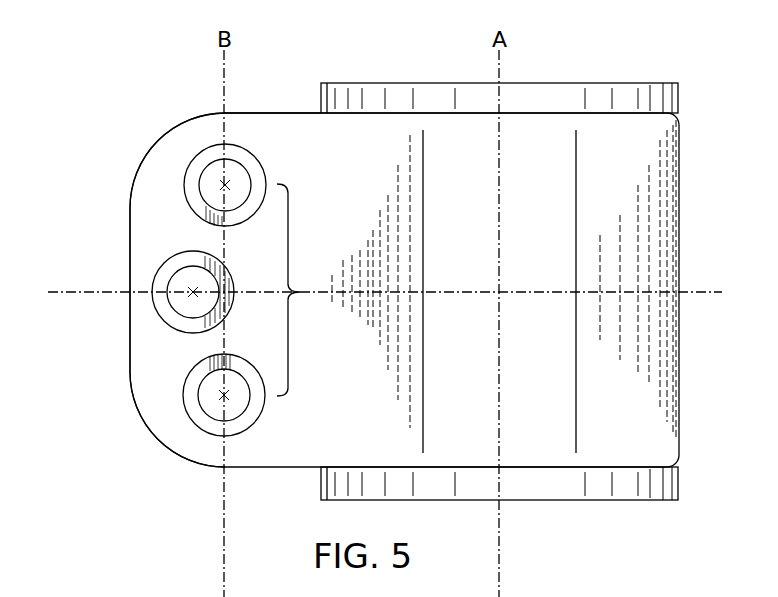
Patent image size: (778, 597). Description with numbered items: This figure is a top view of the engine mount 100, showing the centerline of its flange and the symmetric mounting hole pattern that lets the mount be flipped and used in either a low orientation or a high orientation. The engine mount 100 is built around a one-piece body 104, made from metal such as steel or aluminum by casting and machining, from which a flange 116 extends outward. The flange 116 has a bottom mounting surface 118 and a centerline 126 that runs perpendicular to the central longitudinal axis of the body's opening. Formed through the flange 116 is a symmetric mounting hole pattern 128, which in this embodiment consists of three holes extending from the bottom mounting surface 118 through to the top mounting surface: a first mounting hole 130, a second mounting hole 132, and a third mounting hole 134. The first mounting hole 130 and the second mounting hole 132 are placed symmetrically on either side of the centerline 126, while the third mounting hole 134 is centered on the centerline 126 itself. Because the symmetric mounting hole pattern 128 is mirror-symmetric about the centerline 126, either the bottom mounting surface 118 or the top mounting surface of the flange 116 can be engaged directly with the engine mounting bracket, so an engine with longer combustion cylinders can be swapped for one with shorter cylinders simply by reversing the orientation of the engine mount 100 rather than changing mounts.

The engine mount 100 is at (688, 57).
The one-piece body 104 is at (641, 173).
The flange 116 is at (174, 136).
The bottom mounting surface 118 is at (287, 145).
The centerline 126 is at (70, 291).
The symmetric mounting hole pattern 128 is at (302, 290).
The first mounting hole 130 is at (215, 197).
The second mounting hole 132 is at (205, 300).
The third mounting hole 134 is at (210, 393).